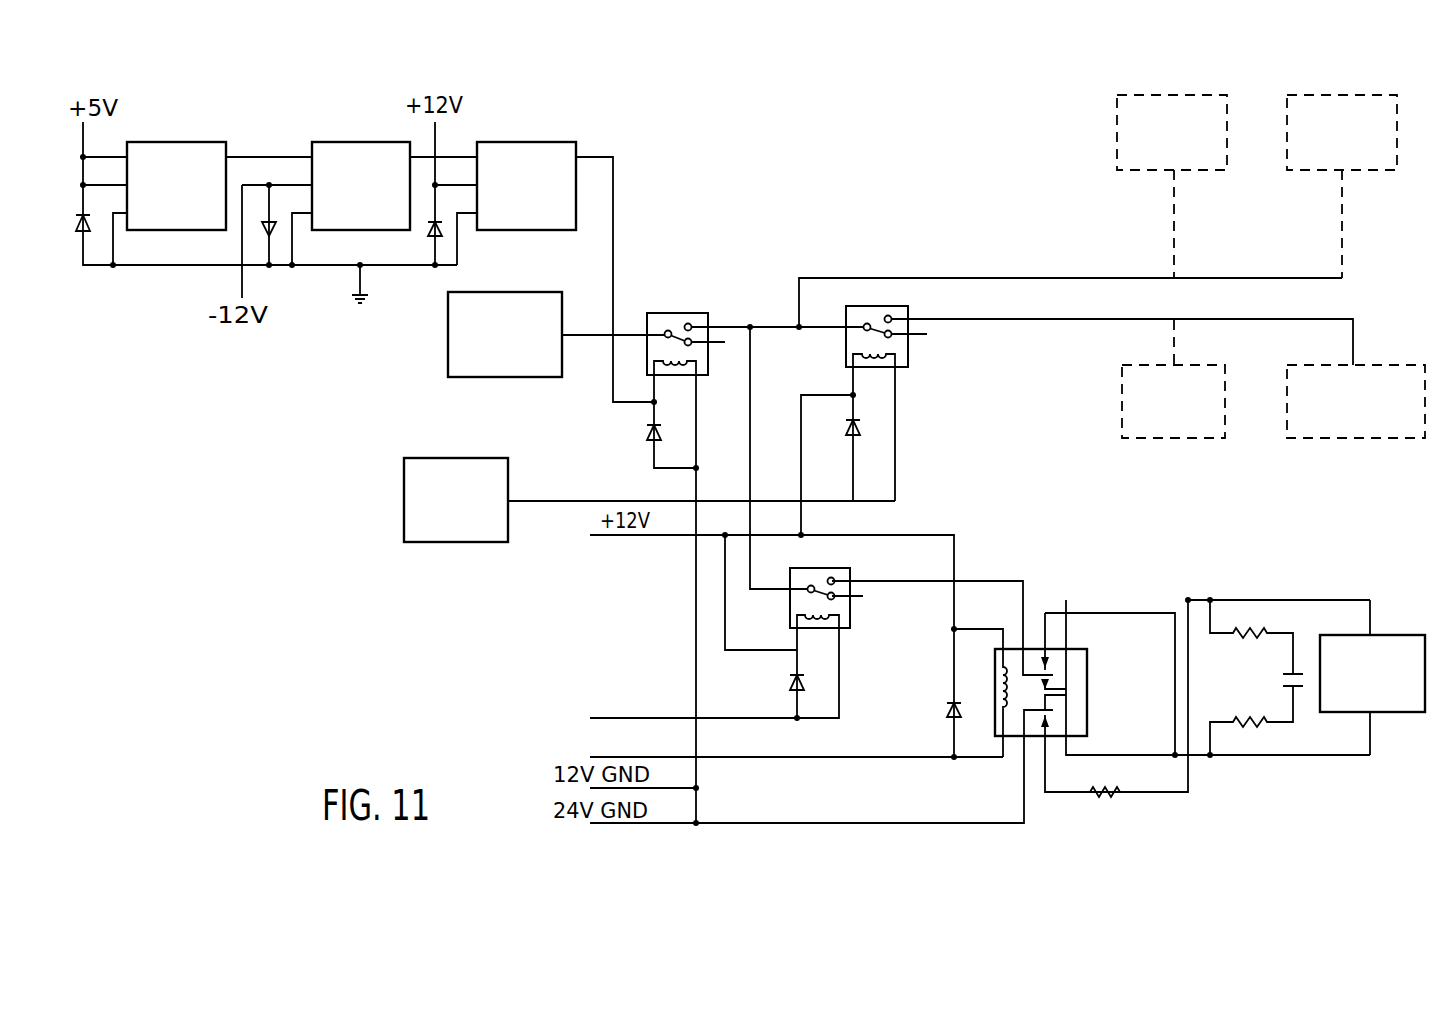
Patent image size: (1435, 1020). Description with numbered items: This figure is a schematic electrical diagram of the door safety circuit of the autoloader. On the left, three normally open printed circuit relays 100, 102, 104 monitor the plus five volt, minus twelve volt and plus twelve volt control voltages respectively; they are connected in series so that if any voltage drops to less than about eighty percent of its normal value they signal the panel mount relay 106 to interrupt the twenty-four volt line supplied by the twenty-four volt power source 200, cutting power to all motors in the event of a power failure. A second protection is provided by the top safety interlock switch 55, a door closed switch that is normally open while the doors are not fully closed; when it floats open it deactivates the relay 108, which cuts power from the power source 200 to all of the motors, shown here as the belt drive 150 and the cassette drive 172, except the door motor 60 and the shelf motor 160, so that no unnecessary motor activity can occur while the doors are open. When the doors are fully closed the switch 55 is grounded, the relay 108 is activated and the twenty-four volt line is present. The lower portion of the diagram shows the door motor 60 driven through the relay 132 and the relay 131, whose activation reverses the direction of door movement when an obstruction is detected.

The top safety interlock switch 55 is at (449, 457).
The door motor 60 is at (1178, 93).
The printed circuit relay 100 is at (201, 141).
The printed circuit relay 102 is at (348, 141).
The printed circuit relay 104 is at (527, 141).
The panel mount relay 106 is at (682, 312).
The relay 108 is at (910, 350).
The relay 131 is at (1088, 672).
The relay 132 is at (851, 617).
The belt drive 150 is at (1150, 364).
The shelf motor 160 is at (1347, 93).
The cassette drive 172 is at (1324, 364).
The 24 V power source 200 is at (532, 291).